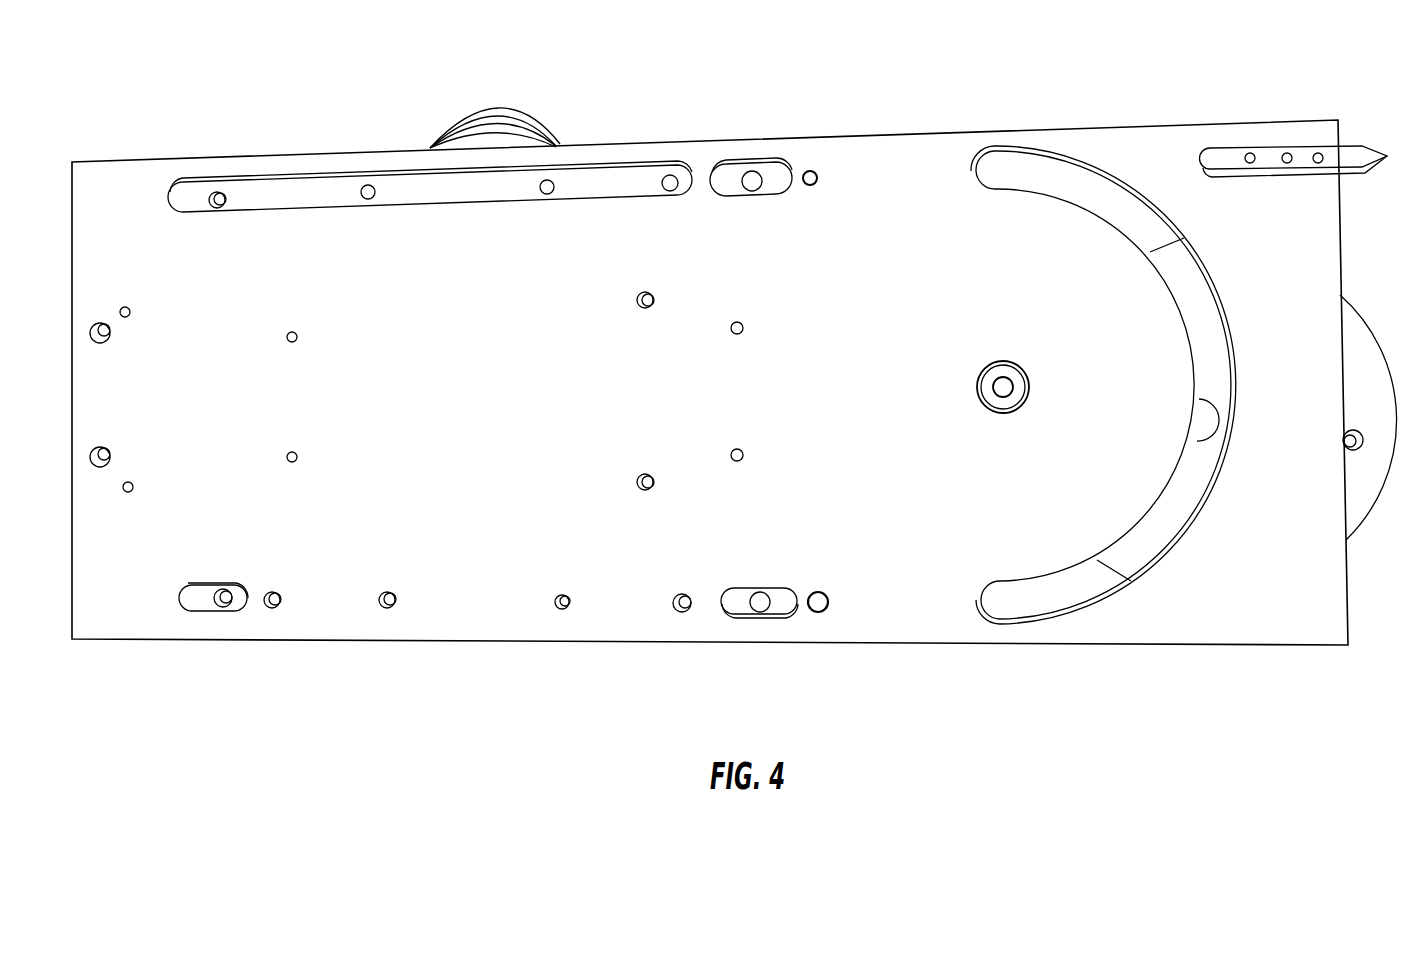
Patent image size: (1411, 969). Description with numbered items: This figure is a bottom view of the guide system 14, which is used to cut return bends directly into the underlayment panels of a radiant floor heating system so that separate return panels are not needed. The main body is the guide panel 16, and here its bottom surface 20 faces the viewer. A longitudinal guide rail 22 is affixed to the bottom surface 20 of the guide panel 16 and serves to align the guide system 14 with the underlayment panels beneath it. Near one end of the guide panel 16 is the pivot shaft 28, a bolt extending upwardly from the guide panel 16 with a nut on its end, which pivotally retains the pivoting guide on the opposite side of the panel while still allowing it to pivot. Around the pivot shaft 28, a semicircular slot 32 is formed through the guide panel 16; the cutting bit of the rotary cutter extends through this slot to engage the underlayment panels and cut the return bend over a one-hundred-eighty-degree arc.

The guide system 14 is at (840, 118).
The guide panel 16 is at (444, 627).
The bottom surface 20 is at (353, 396).
The longitudinal guide rail 22 is at (617, 185).
The pivot shaft 28 is at (998, 372).
The semicircular slot 32 is at (1086, 192).